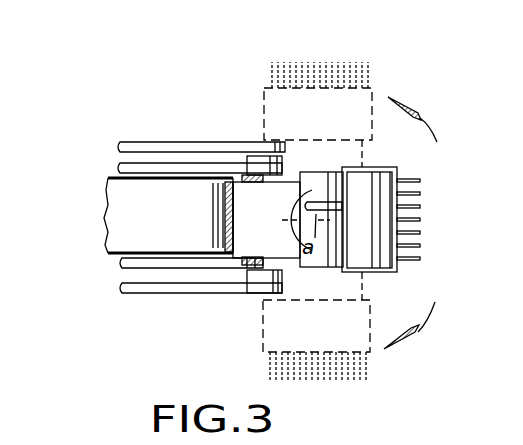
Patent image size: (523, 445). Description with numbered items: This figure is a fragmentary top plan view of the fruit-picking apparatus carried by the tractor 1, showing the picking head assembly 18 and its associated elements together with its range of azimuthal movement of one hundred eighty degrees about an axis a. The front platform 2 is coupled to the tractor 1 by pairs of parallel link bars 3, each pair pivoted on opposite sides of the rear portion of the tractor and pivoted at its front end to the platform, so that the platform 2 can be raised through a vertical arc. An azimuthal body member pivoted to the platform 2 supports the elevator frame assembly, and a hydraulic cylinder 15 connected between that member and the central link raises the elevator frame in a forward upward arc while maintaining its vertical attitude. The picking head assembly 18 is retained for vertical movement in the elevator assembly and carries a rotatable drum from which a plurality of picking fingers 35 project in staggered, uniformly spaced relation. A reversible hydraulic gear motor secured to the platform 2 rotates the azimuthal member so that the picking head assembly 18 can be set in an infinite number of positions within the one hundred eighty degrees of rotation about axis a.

The tractor 1 is at (116, 218).
The front platform 2 is at (258, 226).
The parallel link bars 3 is at (172, 172).
The hydraulic cylinder 15 is at (321, 201).
The picking head assembly 18 is at (256, 100).
The picking fingers 35 is at (420, 181).